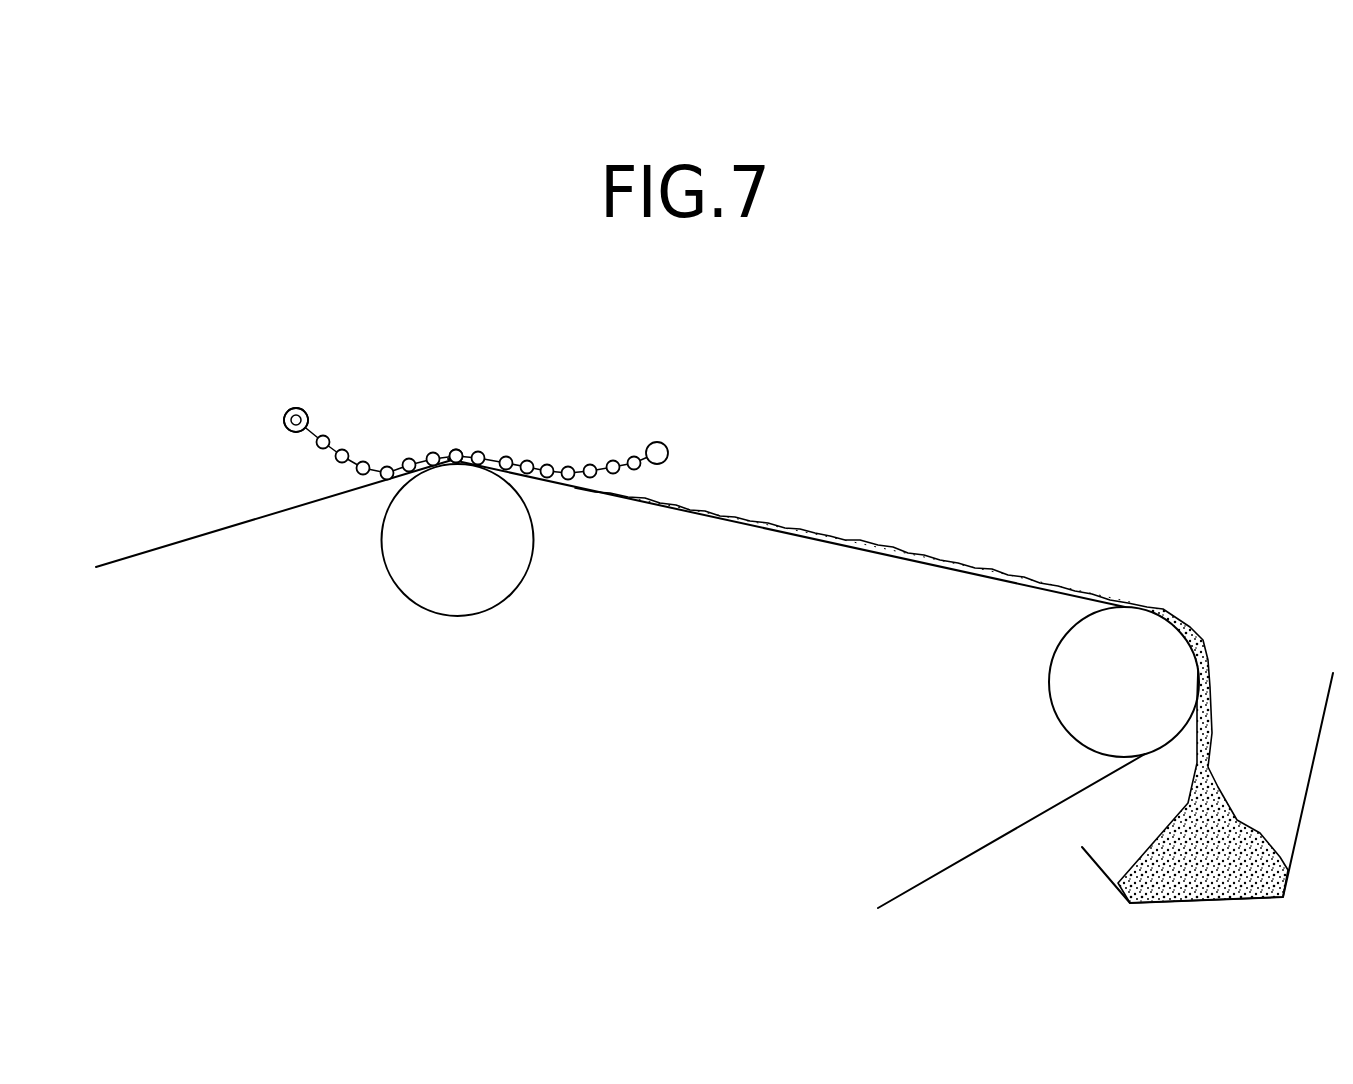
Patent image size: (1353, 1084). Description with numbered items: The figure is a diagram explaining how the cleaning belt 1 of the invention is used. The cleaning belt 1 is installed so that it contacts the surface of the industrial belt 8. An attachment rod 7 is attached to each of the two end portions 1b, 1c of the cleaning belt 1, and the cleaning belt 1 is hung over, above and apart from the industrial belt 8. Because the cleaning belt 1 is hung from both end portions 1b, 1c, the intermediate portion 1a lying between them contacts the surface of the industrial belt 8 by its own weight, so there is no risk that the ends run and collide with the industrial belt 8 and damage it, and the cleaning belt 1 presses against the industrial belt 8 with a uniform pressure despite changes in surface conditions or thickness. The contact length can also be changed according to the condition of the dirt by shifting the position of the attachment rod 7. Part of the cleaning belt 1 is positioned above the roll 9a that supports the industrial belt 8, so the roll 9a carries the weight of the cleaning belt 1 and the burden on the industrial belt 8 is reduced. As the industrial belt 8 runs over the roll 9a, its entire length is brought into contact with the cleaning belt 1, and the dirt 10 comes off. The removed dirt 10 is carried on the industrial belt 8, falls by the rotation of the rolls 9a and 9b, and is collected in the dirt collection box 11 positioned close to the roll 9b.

The cleaning belt 1 is at (593, 417).
The intermediate portion 1a is at (453, 450).
The end portion 1b is at (293, 431).
The end portion 1c is at (657, 465).
The attachment rod 7 is at (296, 408).
The industrial belt 8 is at (262, 518).
The roll 9a is at (487, 595).
The roll 9b is at (1063, 707).
The dirt 10 is at (887, 543).
The dirt collection box 11 is at (1290, 703).